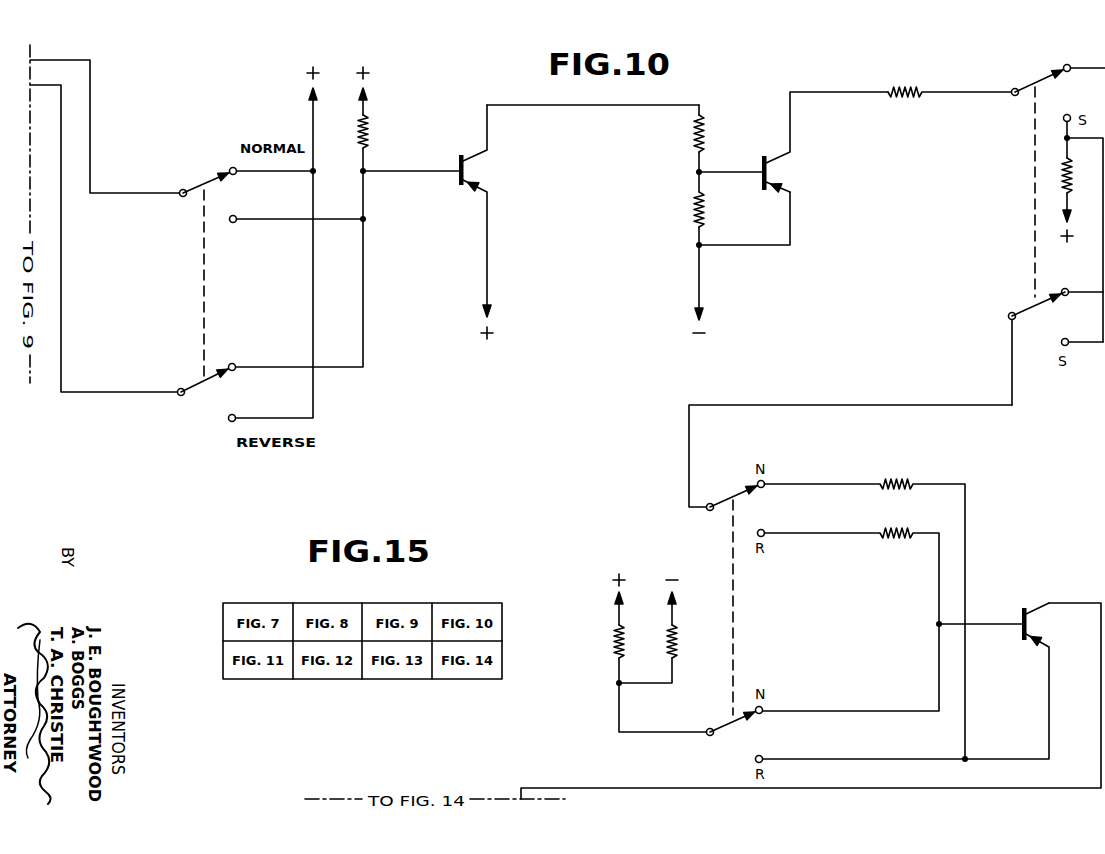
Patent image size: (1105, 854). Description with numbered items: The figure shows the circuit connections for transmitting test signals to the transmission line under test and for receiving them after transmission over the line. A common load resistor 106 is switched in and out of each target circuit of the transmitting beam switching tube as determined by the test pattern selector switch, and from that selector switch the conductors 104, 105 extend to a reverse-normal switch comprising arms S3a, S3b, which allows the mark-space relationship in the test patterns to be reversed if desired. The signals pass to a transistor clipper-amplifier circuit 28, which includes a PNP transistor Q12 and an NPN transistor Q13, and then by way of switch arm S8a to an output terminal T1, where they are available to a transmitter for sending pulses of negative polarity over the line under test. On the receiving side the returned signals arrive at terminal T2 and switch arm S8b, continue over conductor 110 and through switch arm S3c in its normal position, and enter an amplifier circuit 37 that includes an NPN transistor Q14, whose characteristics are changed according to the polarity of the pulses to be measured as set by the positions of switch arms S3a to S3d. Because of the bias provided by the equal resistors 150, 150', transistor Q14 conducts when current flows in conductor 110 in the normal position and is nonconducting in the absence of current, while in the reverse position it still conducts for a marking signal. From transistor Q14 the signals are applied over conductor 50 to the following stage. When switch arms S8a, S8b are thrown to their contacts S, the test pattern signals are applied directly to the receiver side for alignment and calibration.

The transistor clipper-amplifier circuit 28 is at (617, 97).
The conductor 104 is at (37, 58).
The conductor 105 is at (37, 86).
The common load resistor 106 is at (373, 131).
The conductor 110 is at (851, 405).
The amplifier circuit 37 is at (908, 467).
The resistor 150 is at (636, 653).
The resistor 150' is at (671, 631).
The conductor 50 is at (1099, 688).
The PNP transistor Q12 is at (486, 172).
The NPN transistor Q13 is at (789, 173).
The NPN transistor Q14 is at (1022, 612).
The switch arm S3a is at (212, 188).
The switch arm S3b is at (203, 388).
The switch arm S3c is at (741, 488).
The switch arm S3d is at (740, 733).
The switch arm S8a is at (1020, 84).
The switch arm S8b is at (1021, 304).
The output terminal T1 is at (1081, 57).
The terminal T2 is at (1077, 283).